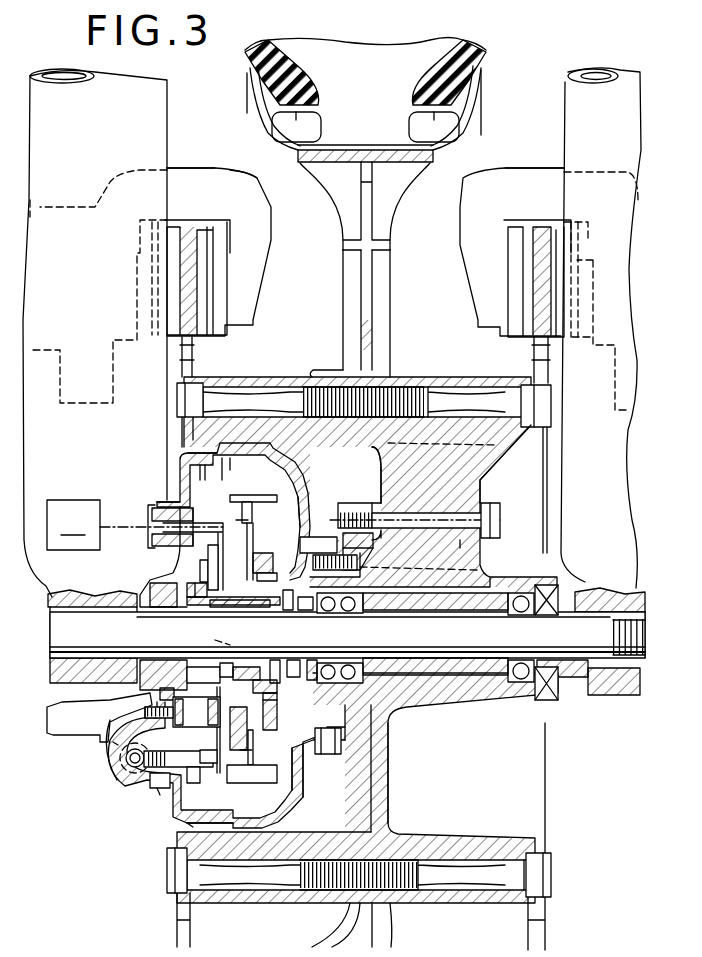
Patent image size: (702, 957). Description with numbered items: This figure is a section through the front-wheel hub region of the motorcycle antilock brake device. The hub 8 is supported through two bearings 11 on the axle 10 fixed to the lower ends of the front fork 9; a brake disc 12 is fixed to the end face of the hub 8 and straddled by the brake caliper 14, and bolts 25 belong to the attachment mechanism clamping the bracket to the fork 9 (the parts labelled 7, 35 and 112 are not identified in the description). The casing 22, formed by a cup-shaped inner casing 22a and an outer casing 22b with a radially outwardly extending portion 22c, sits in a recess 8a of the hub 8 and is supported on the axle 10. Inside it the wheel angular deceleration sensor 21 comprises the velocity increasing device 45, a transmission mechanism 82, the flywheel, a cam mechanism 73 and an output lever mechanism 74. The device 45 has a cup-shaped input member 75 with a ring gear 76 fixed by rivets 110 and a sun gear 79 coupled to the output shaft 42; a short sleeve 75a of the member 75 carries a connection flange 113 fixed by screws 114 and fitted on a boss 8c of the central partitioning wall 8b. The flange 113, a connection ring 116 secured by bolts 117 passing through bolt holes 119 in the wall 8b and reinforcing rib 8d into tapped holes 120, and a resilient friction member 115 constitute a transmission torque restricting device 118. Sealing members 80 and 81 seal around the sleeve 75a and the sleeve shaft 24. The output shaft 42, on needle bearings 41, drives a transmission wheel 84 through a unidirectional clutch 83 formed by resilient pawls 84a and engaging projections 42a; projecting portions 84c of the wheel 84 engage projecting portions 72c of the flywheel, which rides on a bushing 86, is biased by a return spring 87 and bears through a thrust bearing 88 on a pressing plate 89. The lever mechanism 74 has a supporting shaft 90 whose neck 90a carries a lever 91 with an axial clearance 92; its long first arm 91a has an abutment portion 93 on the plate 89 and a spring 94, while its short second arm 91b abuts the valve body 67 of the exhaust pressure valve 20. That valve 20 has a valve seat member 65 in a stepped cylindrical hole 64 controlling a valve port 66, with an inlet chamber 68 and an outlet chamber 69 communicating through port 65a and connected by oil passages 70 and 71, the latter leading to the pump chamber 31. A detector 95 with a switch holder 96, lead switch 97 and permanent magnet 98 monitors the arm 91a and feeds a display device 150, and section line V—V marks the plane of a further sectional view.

The brake device 7 is at (157, 500).
The hub 8 is at (271, 382).
The recess 8a is at (356, 446).
The central vertical partitioning wall 8b is at (384, 467).
The boss 8c is at (362, 588).
The reinforcing rib 8d is at (481, 483).
The front fork 9 is at (167, 107).
The axle 10 is at (393, 641).
The bearing 11 is at (535, 622).
The brake disc 12 is at (188, 247).
The brake caliper 14 is at (268, 238).
The exhaust pressure valve 20 is at (157, 792).
The wheel angular deceleration sensor 21 is at (284, 511).
The casing 22 is at (302, 806).
The inner casing 22a is at (304, 780).
The outer casing 22b is at (185, 822).
The radially outwardly extending portion 22c is at (75, 736).
The sleeve shaft 24 is at (288, 612).
The bolts 25 is at (486, 70).
The chamber 31 is at (145, 710).
The mounting bracket 35 is at (203, 168).
The needle bearings 41 is at (233, 656).
The output shaft 42 is at (210, 612).
The engaging projections 42a is at (279, 691).
The velocity increasing device 45 is at (186, 477).
The stepped cylindrical hole 64 is at (118, 766).
The valve seat member 65 is at (136, 800).
The port 65a is at (180, 749).
The valve port 66 is at (140, 745).
The valve body 67 is at (199, 778).
The inlet chamber 68 is at (118, 745).
The outlet chamber 69 is at (158, 789).
The oil passage 70 is at (124, 757).
The oil passage 71 is at (148, 718).
The projecting portions 72c is at (257, 756).
The cam mechanism 73 is at (262, 560).
The output lever mechanism 74 is at (196, 660).
The input member 75 is at (305, 508).
The short sleeve 75a is at (328, 539).
The ring gear 76 is at (200, 481).
The sun gear 79 is at (170, 597).
The sealing member 80 is at (326, 755).
The sealing member 81 is at (306, 612).
The transmission mechanism 82 is at (278, 715).
The unidirectional clutch 83 is at (277, 704).
The transmission wheel 84 is at (274, 564).
The resilient pawls 84a is at (282, 580).
The projecting portions 84c is at (253, 520).
The bushing 86 is at (241, 608).
The return spring 87 is at (188, 580).
The thrust bearing 88 is at (275, 658).
The pressing plate 89 is at (235, 728).
The supporting shaft 90 is at (196, 712).
The neck 90a is at (174, 691).
The lever 91 is at (207, 567).
The first arm 91a is at (233, 561).
The second arm 91b is at (192, 830).
The clearance 92 is at (229, 730).
The abutment portion 93 is at (213, 643).
The spring 94 is at (175, 548).
The detector 95 is at (152, 528).
The switch holder 96 is at (155, 540).
The lead switch 97 is at (194, 565).
The permanent magnet 98 is at (220, 481).
The rivets 110 is at (359, 868).
The spacer 112 is at (187, 620).
The connection flange 113 is at (376, 546).
The screws 114 is at (376, 560).
The resilient friction member 115 is at (384, 520).
The connection ring 116 is at (354, 507).
The bolts 117 is at (499, 522).
The transmission torque restricting device 118 is at (383, 497).
The bolt holes 119 is at (448, 543).
The tapped holes 120 is at (383, 510).
The display device 150 is at (135, 525).
The section line V— V is at (239, 527).